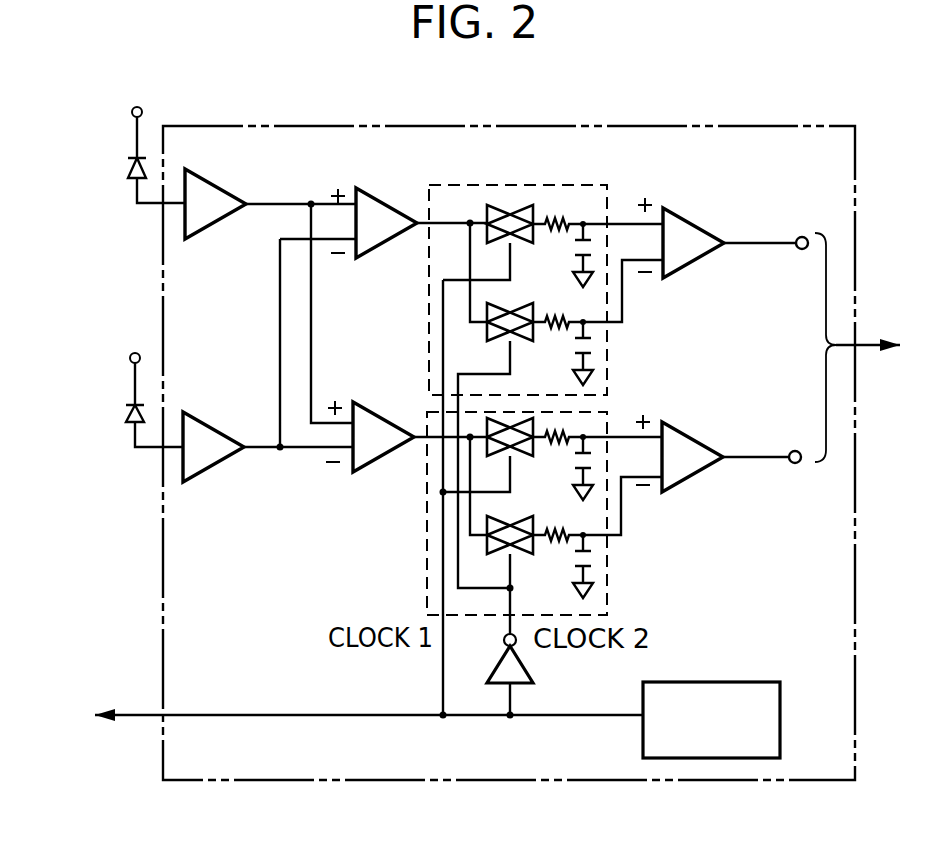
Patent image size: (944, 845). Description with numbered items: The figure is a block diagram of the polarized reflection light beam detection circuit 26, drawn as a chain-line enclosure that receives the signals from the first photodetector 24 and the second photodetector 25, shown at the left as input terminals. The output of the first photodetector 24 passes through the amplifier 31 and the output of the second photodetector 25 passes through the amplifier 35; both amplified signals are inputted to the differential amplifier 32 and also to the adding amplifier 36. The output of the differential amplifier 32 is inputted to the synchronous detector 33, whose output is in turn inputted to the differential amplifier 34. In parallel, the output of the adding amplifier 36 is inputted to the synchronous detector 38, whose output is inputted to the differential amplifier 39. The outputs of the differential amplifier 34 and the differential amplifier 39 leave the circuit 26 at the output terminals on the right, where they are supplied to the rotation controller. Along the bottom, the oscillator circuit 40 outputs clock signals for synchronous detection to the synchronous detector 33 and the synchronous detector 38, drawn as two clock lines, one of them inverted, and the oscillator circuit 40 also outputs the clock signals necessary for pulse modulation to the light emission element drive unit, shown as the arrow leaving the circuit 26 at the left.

The first photodetector 24 is at (128, 161).
The second photodetector 25 is at (125, 410).
The polarized reflection light beam detection circuit 26 is at (590, 127).
The amplifier 31 is at (247, 170).
The differential amplifier 32 is at (383, 200).
The synchronous detector 33 is at (473, 184).
The differential amplifier 34 is at (696, 222).
The amplifier 35 is at (220, 466).
The adding amplifier 36 is at (376, 470).
The synchronous detector 38 is at (425, 530).
The differential amplifier 39 is at (696, 472).
The oscillator circuit 40 is at (735, 682).